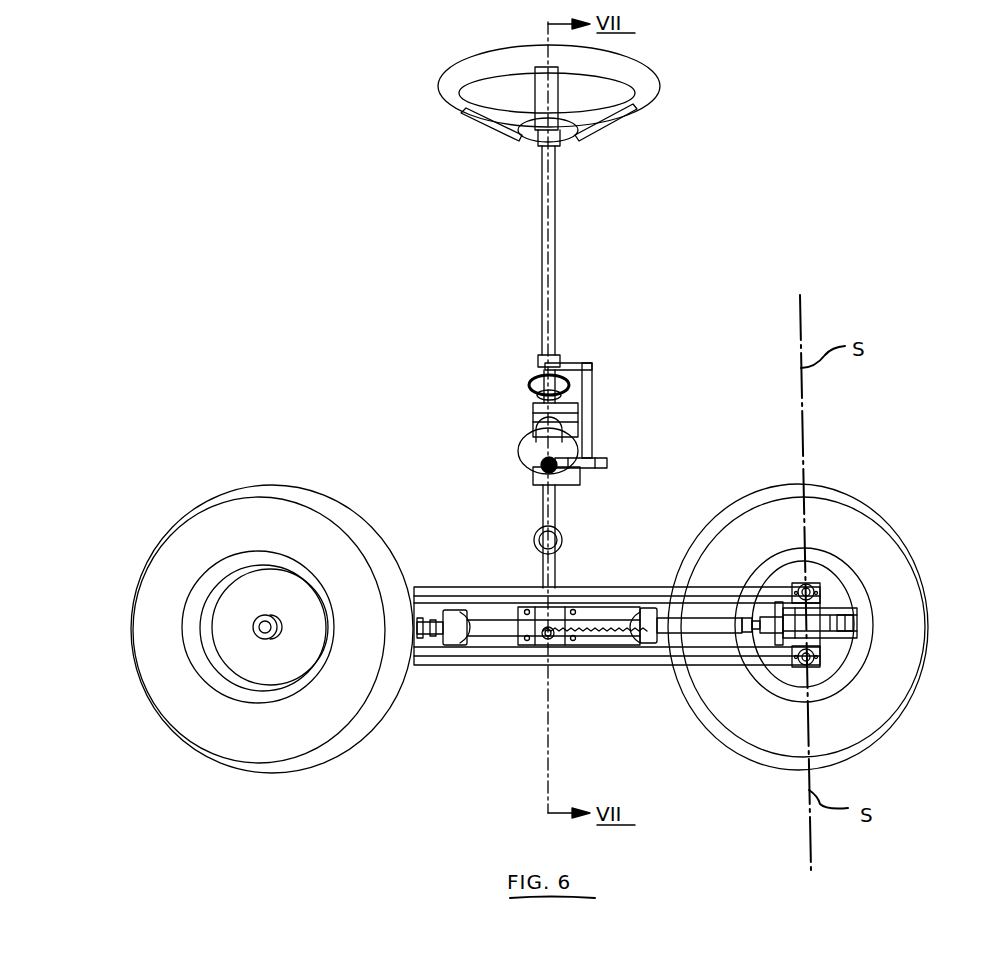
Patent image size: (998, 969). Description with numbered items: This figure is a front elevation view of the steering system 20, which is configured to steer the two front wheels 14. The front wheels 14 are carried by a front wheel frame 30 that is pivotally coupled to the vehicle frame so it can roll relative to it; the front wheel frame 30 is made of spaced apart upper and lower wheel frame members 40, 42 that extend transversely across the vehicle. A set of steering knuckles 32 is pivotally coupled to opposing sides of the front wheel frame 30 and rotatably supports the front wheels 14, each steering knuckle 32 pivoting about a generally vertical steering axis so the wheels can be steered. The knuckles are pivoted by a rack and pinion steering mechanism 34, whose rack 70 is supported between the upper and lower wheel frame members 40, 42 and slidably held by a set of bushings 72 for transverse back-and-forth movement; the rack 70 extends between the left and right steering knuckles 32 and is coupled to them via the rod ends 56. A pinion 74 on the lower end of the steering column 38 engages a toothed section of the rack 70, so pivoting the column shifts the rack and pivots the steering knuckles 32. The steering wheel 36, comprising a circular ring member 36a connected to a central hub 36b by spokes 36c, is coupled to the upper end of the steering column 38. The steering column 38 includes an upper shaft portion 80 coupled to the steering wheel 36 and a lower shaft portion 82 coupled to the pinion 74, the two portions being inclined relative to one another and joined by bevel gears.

The front wheels 14 is at (216, 522).
The steering system 20 is at (733, 196).
The front wheel frame 30 is at (596, 575).
The steering knuckles 32 is at (860, 625).
The rack and pinion steering mechanism 34 is at (517, 625).
The steering wheel 36 is at (552, 123).
The circular ring member 36a is at (490, 62).
The central hub 36b is at (572, 137).
The spokes 36c is at (495, 135).
The steering column 38 is at (487, 338).
The upper wheel frame member 40 is at (468, 595).
The lower wheel frame member 42 is at (447, 660).
The rod ends 56 is at (830, 610).
The rack 70 is at (608, 620).
The bushings 72 is at (470, 645).
The pinion 74 is at (553, 648).
The upper shaft portion 80 is at (556, 272).
The lower shaft portion 82 is at (548, 505).